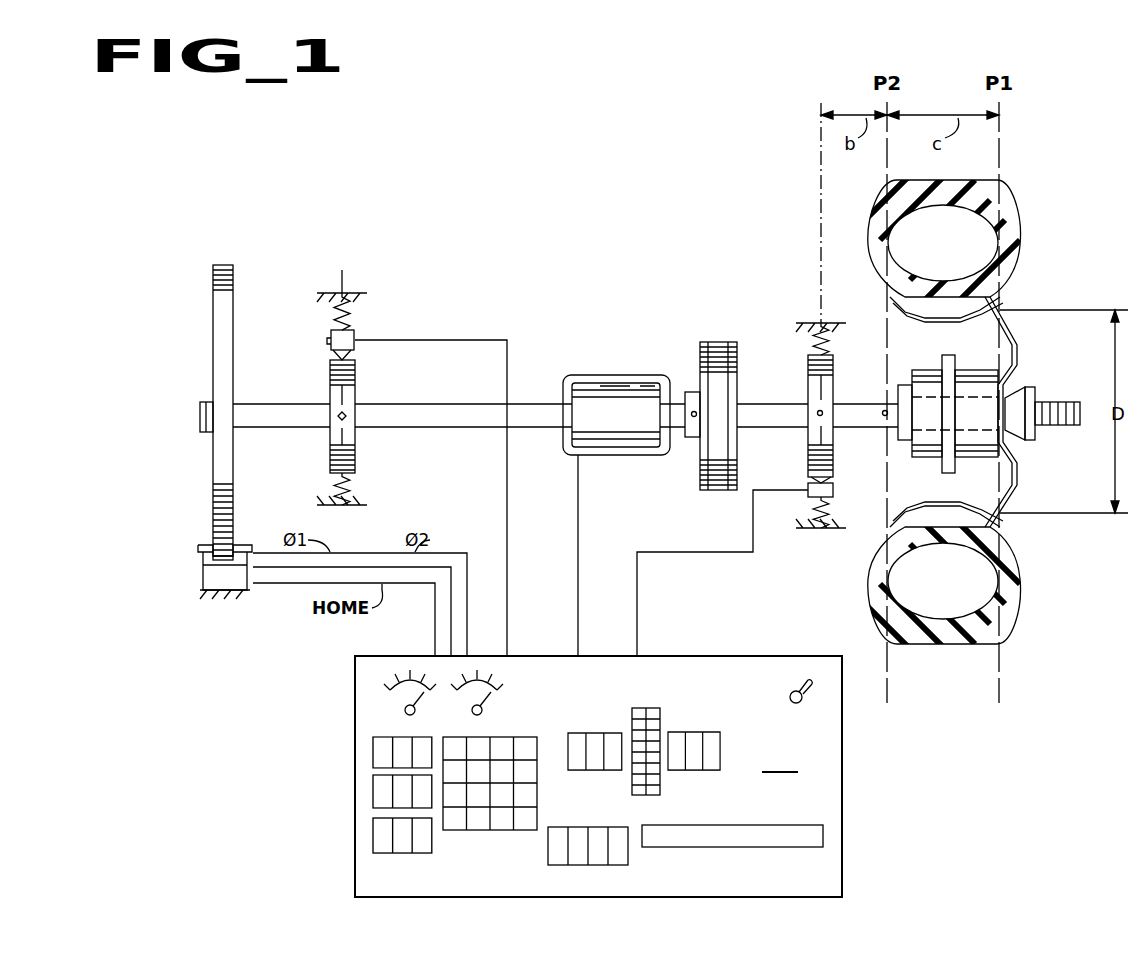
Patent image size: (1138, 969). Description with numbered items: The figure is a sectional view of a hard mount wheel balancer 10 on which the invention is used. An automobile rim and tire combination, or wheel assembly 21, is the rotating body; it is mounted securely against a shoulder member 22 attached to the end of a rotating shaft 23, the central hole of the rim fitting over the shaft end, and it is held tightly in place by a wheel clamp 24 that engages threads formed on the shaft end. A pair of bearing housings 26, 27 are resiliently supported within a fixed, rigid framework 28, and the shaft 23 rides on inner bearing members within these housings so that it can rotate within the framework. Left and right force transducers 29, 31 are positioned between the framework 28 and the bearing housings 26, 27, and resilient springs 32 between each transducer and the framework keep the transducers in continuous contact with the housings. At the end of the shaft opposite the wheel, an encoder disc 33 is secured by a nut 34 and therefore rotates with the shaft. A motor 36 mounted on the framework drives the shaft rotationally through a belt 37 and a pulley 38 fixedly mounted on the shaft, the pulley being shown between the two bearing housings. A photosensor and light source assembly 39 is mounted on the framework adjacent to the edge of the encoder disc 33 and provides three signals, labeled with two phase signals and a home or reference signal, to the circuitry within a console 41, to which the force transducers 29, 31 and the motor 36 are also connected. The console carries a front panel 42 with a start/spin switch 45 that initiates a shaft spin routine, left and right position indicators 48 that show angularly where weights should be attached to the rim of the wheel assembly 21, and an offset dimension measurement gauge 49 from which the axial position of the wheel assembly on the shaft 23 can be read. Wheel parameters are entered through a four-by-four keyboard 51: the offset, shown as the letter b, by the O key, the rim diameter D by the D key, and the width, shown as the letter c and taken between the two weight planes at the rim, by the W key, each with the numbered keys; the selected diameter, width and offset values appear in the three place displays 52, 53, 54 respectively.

The hard mount wheel balancer 10 is at (376, 168).
The rim and tire combination (wheel assembly) 21 is at (1017, 219).
The shoulder member 22 is at (930, 375).
The rotating shaft 23 is at (522, 404).
The wheel clamp 24 is at (1012, 385).
The bearing housing 26 is at (352, 388).
The bearing housing 27 is at (815, 383).
The framework 28 is at (350, 505).
The left force transducer 29 is at (330, 346).
The right force transducer 31 is at (835, 490).
The resilient springs 32 is at (348, 318).
The encoder disc 33 is at (222, 300).
The nut 34 is at (207, 436).
The motor 36 is at (598, 456).
The belt 37 is at (720, 345).
The pulley 38 is at (700, 366).
The photosensor and light source assembly 39 is at (200, 568).
The console 41 is at (603, 761).
The front panel 42 is at (780, 761).
The start/spin switch 45 is at (794, 690).
The left and right position indicators 48 is at (652, 720).
The offset dimension measurement gauge 49 is at (820, 838).
The four-by-four keyboard 51 is at (490, 737).
The three place display 52 is at (373, 752).
The three place display 53 is at (373, 800).
The three place display 54 is at (373, 842).